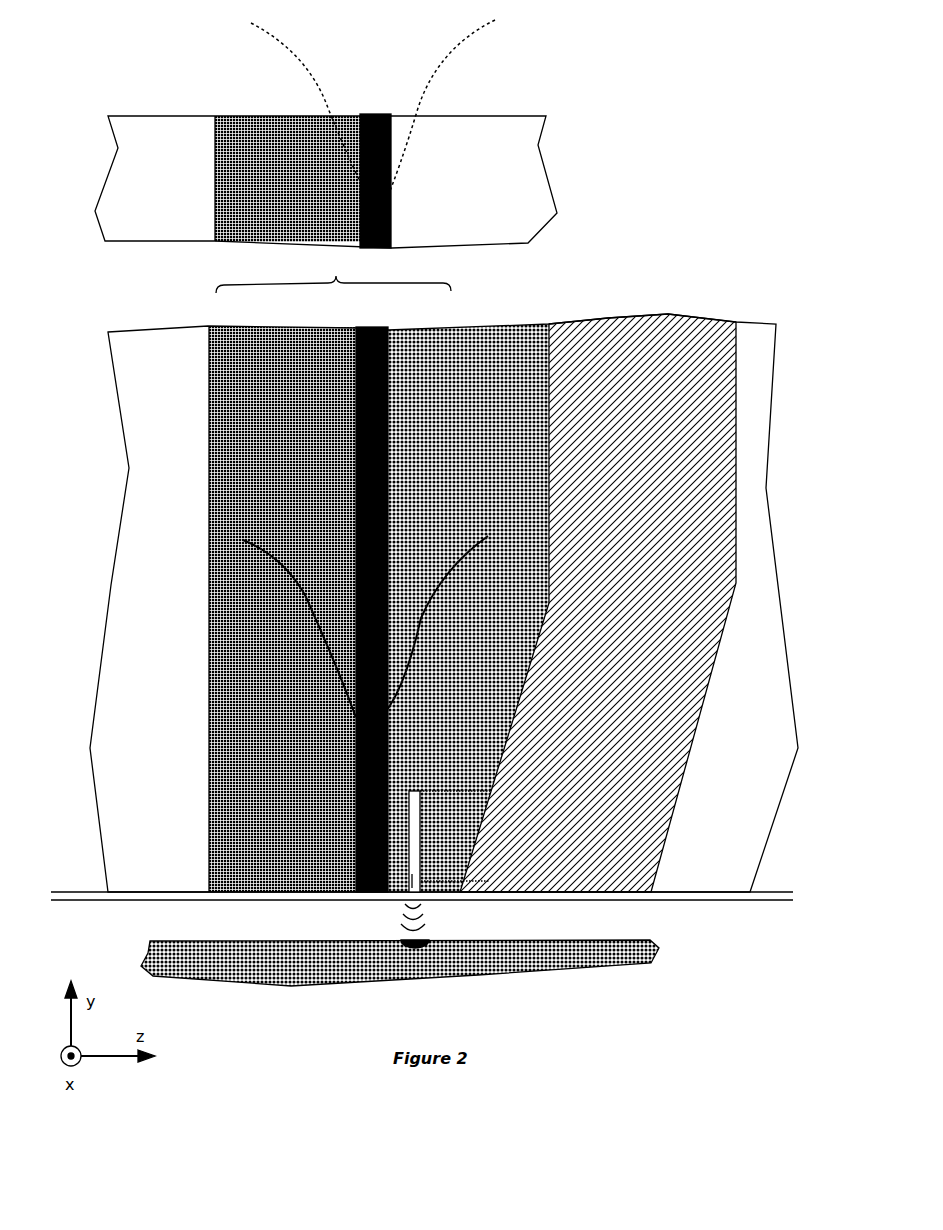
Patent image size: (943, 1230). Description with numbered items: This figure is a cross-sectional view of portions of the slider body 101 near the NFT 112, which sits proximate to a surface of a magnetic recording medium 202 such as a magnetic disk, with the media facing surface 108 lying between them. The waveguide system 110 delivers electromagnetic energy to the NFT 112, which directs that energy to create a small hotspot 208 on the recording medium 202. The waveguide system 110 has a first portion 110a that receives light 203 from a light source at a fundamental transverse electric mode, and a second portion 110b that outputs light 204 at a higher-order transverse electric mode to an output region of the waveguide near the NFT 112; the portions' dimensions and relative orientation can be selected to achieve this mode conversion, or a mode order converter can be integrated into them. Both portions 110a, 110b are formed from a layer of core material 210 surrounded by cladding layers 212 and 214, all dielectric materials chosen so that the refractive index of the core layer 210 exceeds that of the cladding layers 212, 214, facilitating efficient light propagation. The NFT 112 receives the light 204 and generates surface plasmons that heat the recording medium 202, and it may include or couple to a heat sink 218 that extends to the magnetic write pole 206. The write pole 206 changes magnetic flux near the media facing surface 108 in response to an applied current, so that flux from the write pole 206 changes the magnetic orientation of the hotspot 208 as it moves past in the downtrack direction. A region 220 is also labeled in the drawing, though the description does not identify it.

The slider body 101 is at (738, 96).
The waveguide system 110 is at (462, 99).
The first portion 110a is at (588, 98).
The second portion 110b is at (172, 322).
The light 203 is at (333, 145).
The light 204 is at (333, 682).
The magnetic write pole 206 is at (647, 307).
The core layer 210 is at (366, 243).
The cladding layer 212 is at (488, 236).
The cladding layer 214 is at (240, 230).
The heat sink 218 is at (440, 857).
The substrate region 220 is at (147, 860).
The NFT 112 is at (400, 891).
The media facing surface 108 is at (690, 892).
The magnetic recording medium 202 is at (192, 953).
The hotspot 208 is at (407, 940).